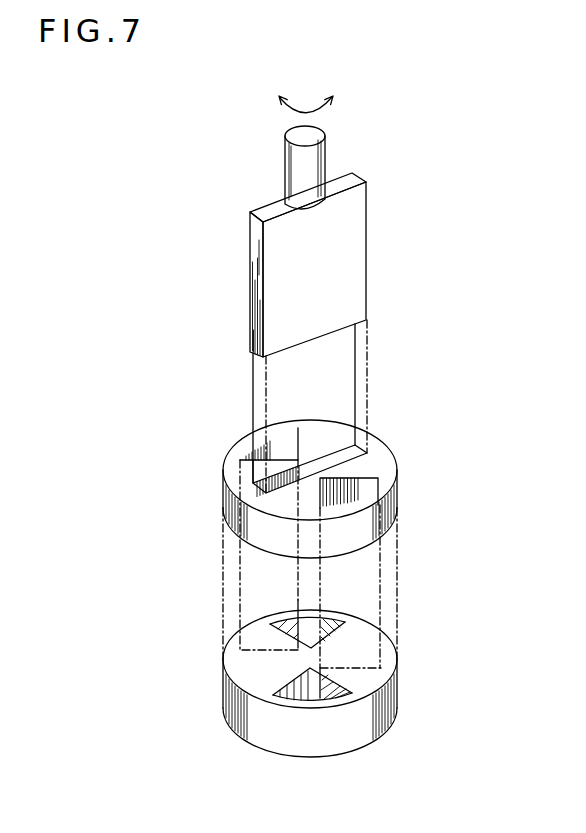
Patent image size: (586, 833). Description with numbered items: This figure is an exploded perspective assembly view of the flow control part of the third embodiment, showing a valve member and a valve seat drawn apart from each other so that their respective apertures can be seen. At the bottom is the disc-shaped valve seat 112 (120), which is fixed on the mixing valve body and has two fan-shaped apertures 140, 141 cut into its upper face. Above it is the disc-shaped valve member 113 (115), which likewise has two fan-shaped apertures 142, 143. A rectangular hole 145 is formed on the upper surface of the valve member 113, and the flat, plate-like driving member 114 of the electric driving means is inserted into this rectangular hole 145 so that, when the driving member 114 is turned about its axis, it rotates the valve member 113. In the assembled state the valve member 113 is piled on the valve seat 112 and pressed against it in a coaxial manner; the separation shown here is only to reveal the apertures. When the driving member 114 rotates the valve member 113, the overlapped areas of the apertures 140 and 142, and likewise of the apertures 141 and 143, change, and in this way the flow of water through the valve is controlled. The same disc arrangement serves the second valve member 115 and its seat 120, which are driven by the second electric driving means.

The driving member 114 is at (366, 222).
The valve member 113 is at (364, 479).
The valve member 115 is at (379, 537).
The fan-shaped aperture 143 is at (283, 443).
The rectangular hole 145 is at (344, 446).
The fan-shaped aperture 142 is at (333, 509).
The valve seat 112 is at (352, 750).
The lower coupling disk (alternate) 120 is at (355, 708).
The fan-shaped aperture 141 is at (345, 623).
The fan-shaped aperture 140 is at (296, 690).